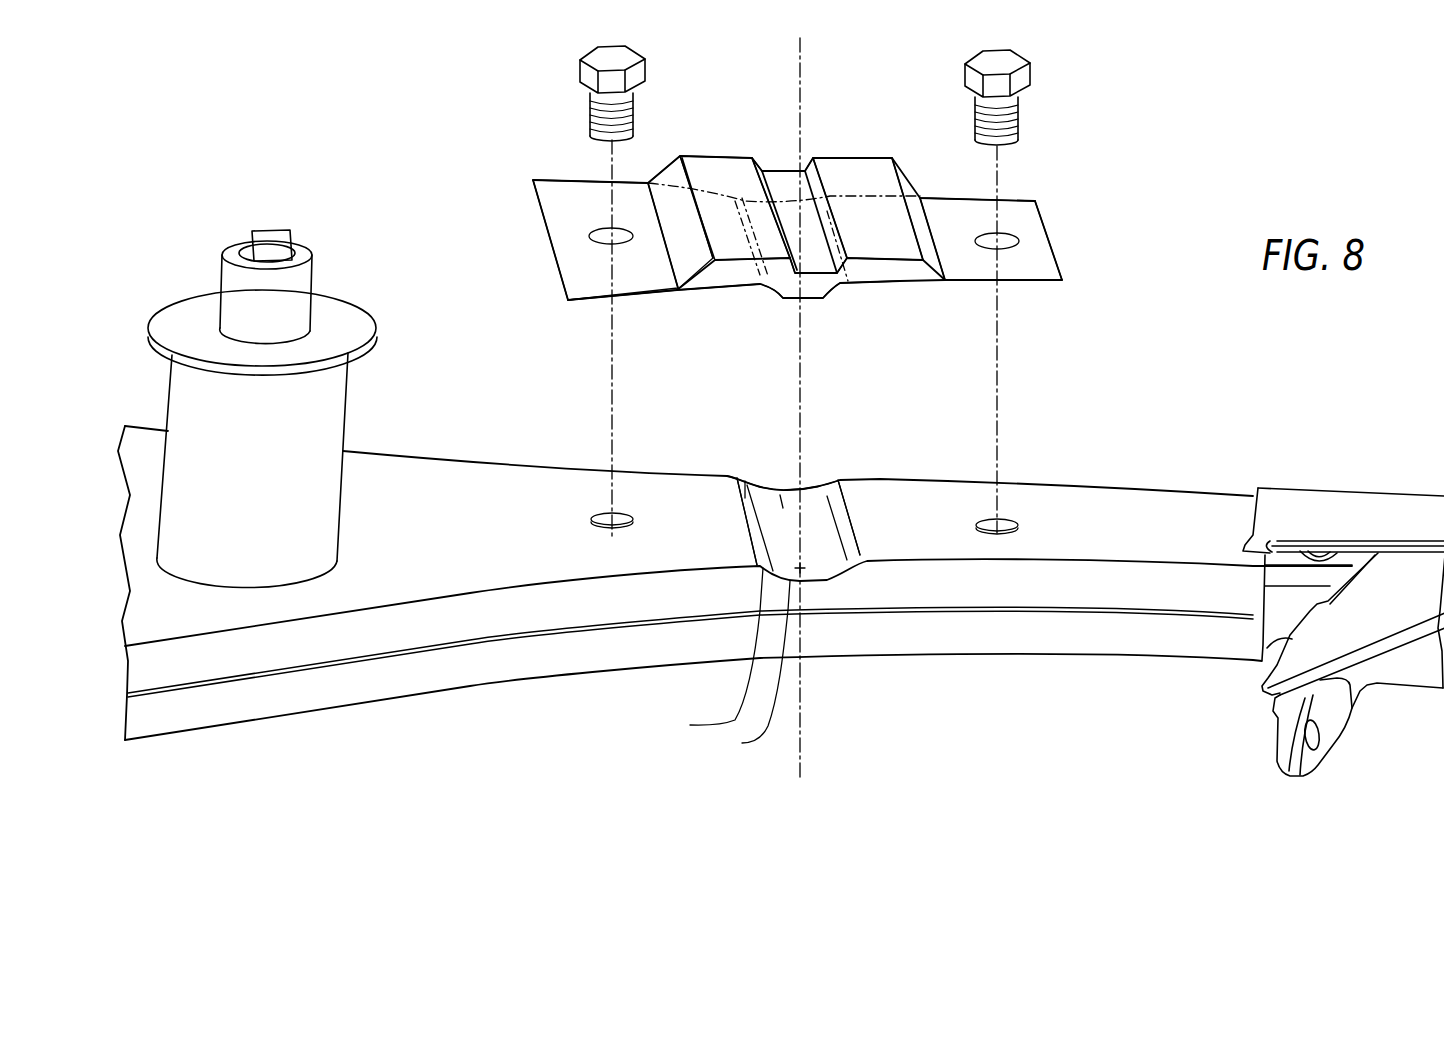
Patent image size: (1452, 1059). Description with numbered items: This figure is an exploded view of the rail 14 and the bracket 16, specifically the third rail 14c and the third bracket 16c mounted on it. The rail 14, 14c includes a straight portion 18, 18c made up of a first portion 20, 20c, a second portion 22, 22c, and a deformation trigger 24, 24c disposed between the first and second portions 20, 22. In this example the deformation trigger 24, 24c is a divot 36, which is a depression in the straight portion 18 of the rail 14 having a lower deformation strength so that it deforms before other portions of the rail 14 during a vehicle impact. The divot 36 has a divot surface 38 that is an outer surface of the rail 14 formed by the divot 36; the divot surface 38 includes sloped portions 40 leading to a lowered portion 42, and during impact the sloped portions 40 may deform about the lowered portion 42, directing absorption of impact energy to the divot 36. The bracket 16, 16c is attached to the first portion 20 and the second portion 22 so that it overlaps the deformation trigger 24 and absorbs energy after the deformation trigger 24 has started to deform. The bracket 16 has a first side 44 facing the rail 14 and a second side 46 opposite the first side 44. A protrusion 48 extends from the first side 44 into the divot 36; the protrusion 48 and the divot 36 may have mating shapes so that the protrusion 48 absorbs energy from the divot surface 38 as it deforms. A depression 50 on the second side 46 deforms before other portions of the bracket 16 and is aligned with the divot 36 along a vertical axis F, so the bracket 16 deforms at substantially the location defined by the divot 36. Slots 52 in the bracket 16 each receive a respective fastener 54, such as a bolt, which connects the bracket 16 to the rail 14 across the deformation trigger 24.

The rail 14 is at (781, 503).
The third rail 14c is at (1185, 520).
The bracket 16 is at (802, 223).
The third bracket 16c is at (910, 205).
The straight portion 18 is at (690, 655).
The straight portion 18c is at (902, 597).
The first portion 20 is at (555, 219).
The first portion 20c is at (565, 210).
The second portion 22 is at (1046, 220).
The second portion 22c is at (1035, 263).
The deformation trigger 24 is at (690, 655).
The deformation trigger 24c is at (690, 655).
The divot 36 is at (752, 670).
The divot surface 38 is at (750, 202).
The sloped portions 40 is at (740, 483).
The lowered portion 42 is at (782, 508).
The first side 44 is at (637, 298).
The second side 46 is at (705, 187).
The protrusion 48 is at (813, 290).
The depression 50 is at (785, 193).
The slot 52 is at (625, 528).
The fastener 54 is at (582, 74).
The vertical axis F is at (812, 68).